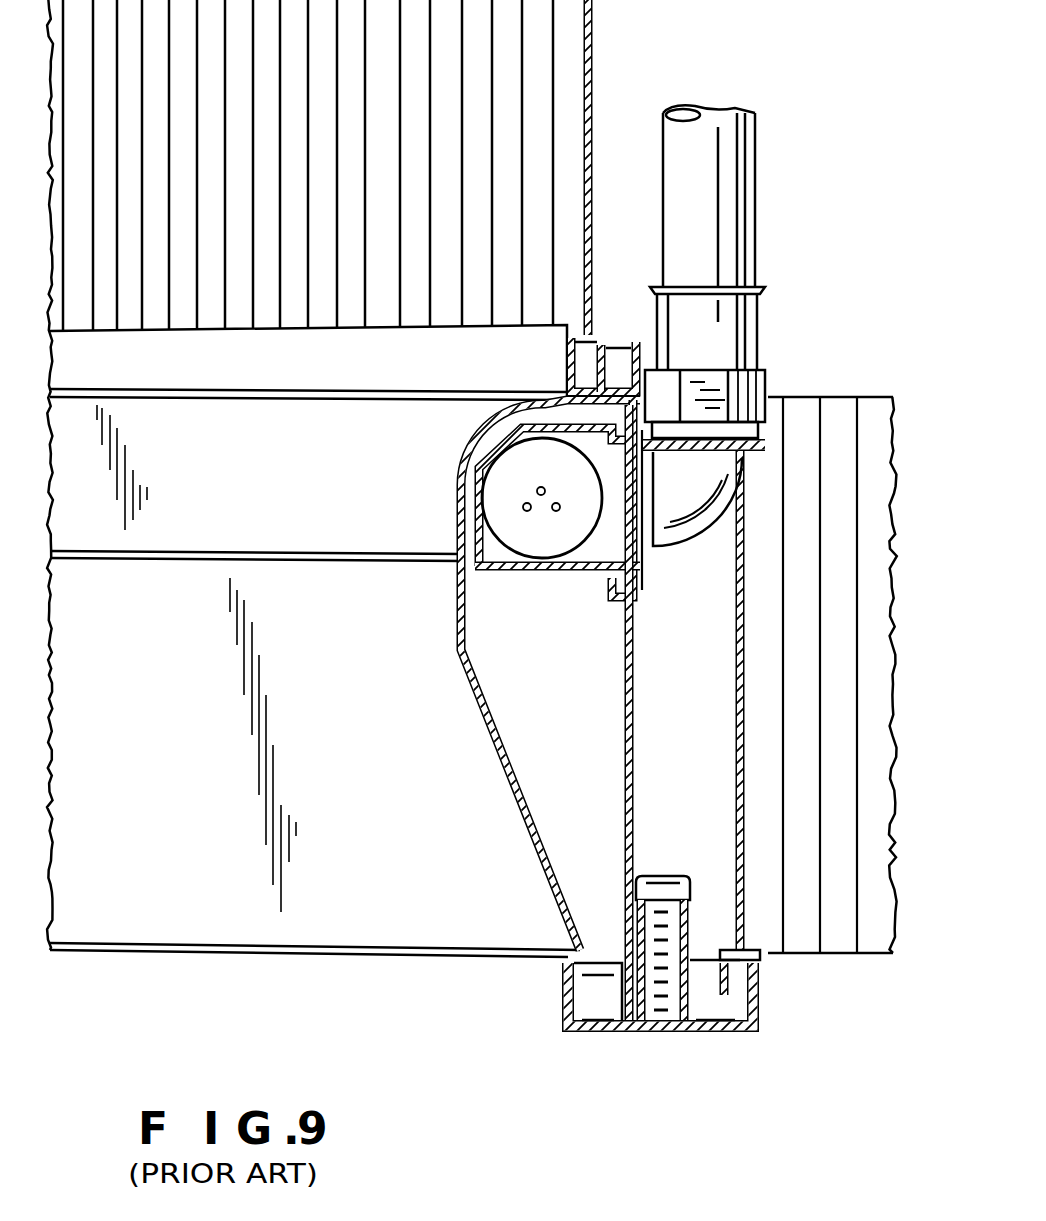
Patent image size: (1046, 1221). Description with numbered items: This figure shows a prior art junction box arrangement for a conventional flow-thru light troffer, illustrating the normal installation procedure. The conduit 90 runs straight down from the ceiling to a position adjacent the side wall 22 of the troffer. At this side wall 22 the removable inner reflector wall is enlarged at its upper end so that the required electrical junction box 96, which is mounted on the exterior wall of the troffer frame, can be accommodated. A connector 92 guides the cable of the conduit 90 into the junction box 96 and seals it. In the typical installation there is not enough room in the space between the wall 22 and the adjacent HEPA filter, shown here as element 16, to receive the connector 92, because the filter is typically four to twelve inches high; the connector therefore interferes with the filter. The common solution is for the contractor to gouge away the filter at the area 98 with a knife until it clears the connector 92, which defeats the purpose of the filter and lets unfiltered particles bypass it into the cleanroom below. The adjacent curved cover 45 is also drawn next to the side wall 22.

The wall 16 is at (857, 397).
The side wall 22 is at (636, 676).
The cover plate 45 is at (466, 694).
The conduit 90 is at (733, 201).
The connector 92 is at (675, 500).
The electrical junction box 96 is at (563, 578).
The area 98 is at (776, 370).